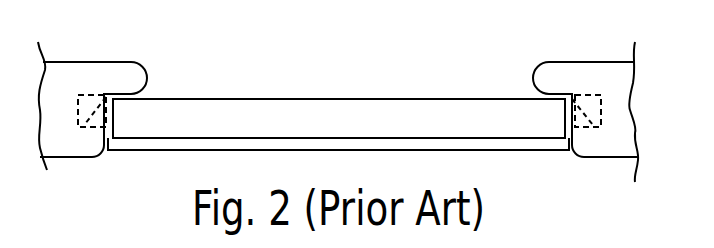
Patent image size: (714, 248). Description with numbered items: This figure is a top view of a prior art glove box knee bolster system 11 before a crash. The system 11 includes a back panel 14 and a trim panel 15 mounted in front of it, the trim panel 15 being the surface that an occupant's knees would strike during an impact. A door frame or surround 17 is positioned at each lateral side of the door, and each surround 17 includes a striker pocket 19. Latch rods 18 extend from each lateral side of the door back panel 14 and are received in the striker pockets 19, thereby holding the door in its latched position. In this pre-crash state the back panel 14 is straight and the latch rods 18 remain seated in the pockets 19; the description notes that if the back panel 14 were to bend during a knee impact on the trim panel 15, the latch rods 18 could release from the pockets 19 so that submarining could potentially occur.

The system 11 is at (308, 72).
The back panel 14 is at (429, 98).
The trim panel 15 is at (530, 152).
The door frame or surround 17 is at (65, 62).
The latch rods 18 is at (108, 115).
The striker pockets 19 is at (80, 120).